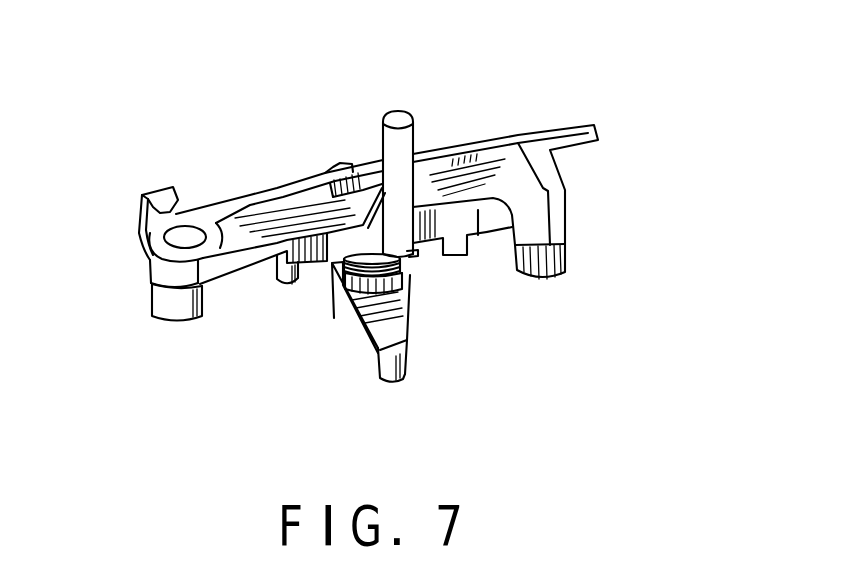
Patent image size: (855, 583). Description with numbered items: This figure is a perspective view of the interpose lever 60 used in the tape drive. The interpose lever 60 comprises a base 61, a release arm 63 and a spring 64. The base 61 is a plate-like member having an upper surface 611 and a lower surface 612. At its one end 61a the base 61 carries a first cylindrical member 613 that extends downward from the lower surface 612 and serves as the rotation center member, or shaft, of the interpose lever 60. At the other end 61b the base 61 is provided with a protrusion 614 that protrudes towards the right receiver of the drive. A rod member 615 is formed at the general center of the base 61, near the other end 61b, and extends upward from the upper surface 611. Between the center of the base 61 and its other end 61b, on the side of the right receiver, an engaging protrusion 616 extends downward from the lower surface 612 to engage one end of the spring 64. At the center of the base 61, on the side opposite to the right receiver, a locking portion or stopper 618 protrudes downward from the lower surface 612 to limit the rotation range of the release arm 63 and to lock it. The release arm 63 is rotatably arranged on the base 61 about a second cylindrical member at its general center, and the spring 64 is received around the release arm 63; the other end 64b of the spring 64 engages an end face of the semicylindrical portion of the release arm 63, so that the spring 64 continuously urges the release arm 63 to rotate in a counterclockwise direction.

The interpose lever 60 is at (470, 120).
The base 61 is at (227, 228).
The one end of the base 61a is at (148, 267).
The other end of the base 61b is at (550, 172).
The upper surface 611 is at (258, 230).
The lower surface 612 is at (240, 288).
The first cylindrical member 613 is at (153, 297).
The protrusion 614 is at (567, 253).
The rod member 615 is at (397, 110).
The engaging protrusion 616 is at (422, 254).
The locking portion 618 is at (342, 161).
The release arm 63 is at (390, 327).
The spring 64 is at (333, 318).
The other end of the spring 64b is at (410, 258).